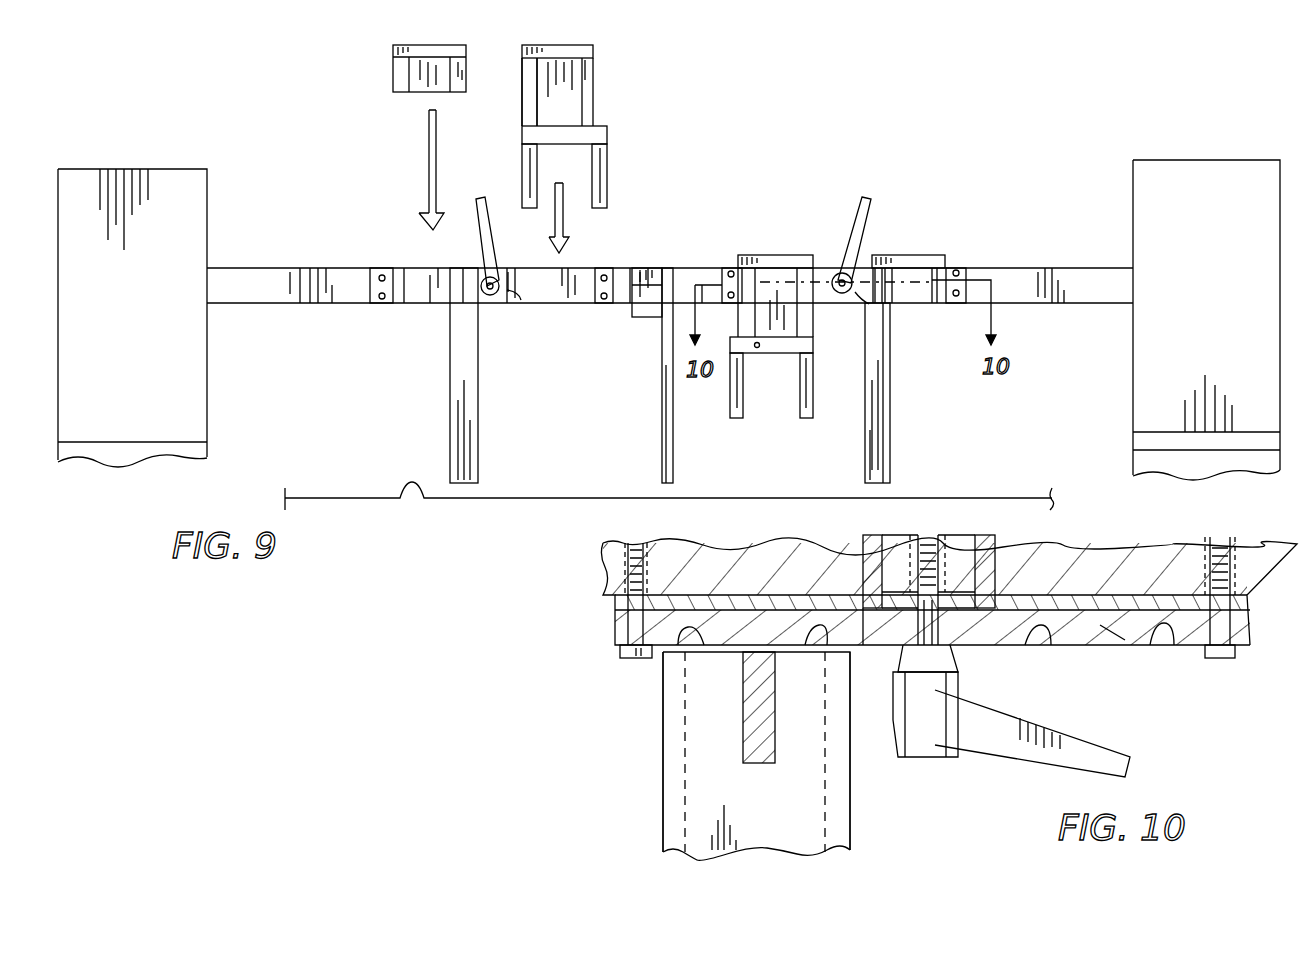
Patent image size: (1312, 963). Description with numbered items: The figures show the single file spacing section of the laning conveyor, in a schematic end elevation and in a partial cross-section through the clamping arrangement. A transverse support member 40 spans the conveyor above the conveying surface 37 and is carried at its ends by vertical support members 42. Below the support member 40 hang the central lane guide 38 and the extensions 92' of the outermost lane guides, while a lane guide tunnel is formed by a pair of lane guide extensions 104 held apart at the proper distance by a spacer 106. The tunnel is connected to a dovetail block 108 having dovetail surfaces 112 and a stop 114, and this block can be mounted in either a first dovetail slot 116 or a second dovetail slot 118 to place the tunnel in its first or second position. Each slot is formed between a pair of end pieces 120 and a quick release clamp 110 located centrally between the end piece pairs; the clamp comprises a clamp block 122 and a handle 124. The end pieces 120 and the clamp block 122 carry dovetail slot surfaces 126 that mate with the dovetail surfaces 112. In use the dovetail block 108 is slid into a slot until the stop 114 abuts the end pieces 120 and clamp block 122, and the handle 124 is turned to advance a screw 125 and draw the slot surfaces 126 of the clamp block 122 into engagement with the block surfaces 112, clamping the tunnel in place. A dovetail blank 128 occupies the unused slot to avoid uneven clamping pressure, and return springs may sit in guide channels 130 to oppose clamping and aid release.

In FIG. 9, the conveying surface 37 is at (410, 500).
In FIG. 9, the central lane guide 38 is at (662, 426).
In FIG. 9, the support member 40 is at (260, 274).
In FIG. 9, the vertical support member 42 is at (158, 178).
In FIG. 9, the lane guide extension 92' is at (666, 375).
In FIG. 9, the lane guide extension 104 is at (522, 186).
In FIG. 10, the lane guide extension 104 is at (664, 822).
In FIG. 9, the spacer 106 is at (608, 137).
In FIG. 10, the spacer 106 is at (706, 762).
In FIG. 9, the dovetail block 108 is at (593, 80).
In FIG. 9, the quick release clamp 110 is at (494, 308).
In FIG. 10, the quick release clamp 110 is at (966, 652).
In FIG. 9, the dovetail surface 112 is at (518, 90).
In FIG. 9, the stop 114 is at (570, 50).
In FIG. 9, the first dovetail slot 116 is at (560, 308).
In FIG. 9, the second dovetail slot 118 is at (420, 308).
In FIG. 9, the end piece 120 is at (381, 275).
In FIG. 10, the end piece 120 is at (620, 636).
In FIG. 9, the clamp block 122 is at (520, 304).
In FIG. 10, the clamp block 122 is at (872, 650).
In FIG. 9, the handle 124 is at (484, 218).
In FIG. 10, the handle 124 is at (998, 742).
In FIG. 10, the screw 125 is at (928, 542).
In FIG. 10, the dovetail slot surface 126 is at (702, 650).
In FIG. 9, the dovetail blank 128 is at (393, 62).
In FIG. 10, the dovetail blank 128 is at (1116, 636).
In FIG. 10, the guide channel 130 is at (994, 538).